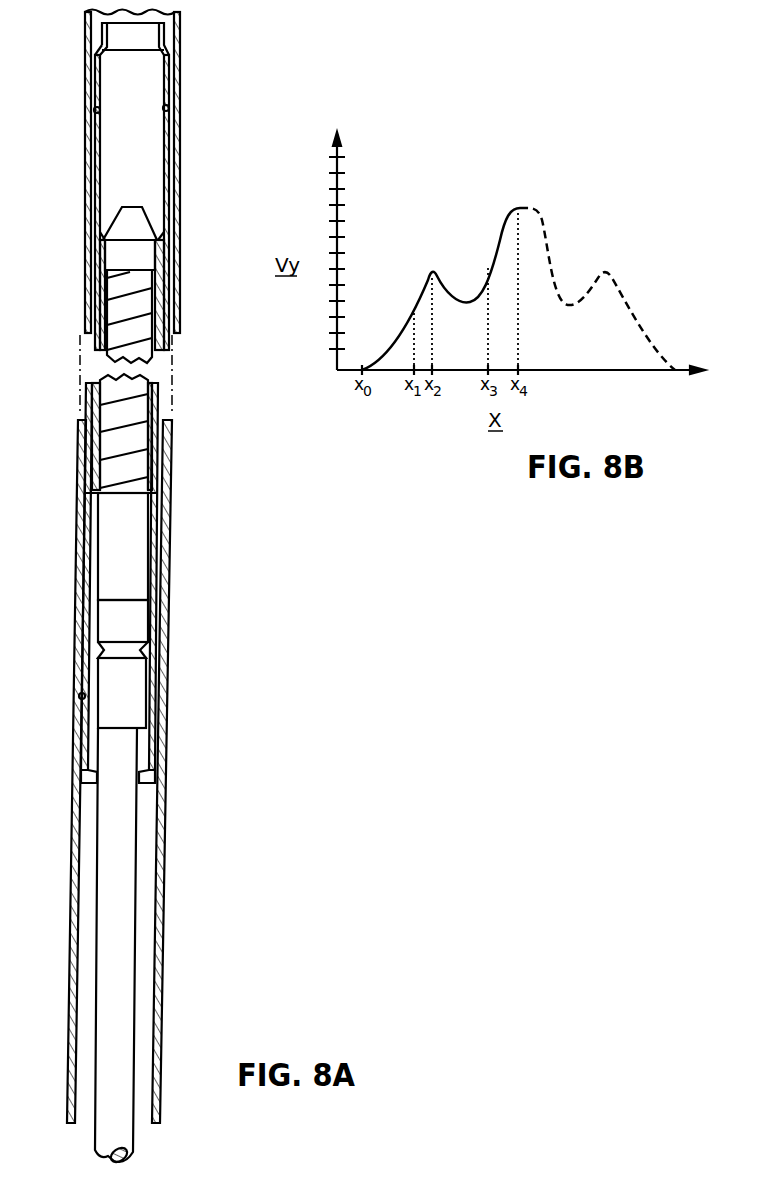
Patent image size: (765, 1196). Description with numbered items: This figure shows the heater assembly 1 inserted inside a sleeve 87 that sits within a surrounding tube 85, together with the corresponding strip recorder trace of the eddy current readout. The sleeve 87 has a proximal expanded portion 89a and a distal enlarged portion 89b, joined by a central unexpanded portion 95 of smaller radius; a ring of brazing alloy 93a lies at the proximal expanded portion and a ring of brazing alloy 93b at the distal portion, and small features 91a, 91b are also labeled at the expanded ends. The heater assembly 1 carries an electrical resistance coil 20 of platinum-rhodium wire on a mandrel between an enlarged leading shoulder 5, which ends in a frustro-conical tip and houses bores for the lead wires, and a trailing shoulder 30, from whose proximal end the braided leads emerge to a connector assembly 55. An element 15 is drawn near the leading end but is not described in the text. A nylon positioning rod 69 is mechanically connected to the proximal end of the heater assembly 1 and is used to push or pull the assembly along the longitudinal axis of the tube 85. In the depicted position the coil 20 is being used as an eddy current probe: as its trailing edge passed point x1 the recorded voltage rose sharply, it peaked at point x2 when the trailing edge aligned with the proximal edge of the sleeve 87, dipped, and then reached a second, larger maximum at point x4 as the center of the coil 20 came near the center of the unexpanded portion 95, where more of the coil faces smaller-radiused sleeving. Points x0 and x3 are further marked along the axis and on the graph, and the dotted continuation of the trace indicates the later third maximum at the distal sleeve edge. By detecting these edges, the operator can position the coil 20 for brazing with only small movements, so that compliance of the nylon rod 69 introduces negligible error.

The heater assembly 1 is at (118, 413).
The leading shoulder 5 is at (138, 266).
The threaded rod 15 is at (125, 320).
The coil 20 is at (160, 433).
The trailing shoulder 30 is at (135, 563).
The connector assembly 55 is at (135, 633).
The nylon positioning rod 69 is at (131, 841).
The tube 85 is at (180, 78).
The sleeve 87 is at (162, 48).
The proximal expanded portion of the sleeve 89a is at (160, 598).
The distal enlarged portion of the sleeve 89b is at (175, 155).
The seal 91a is at (80, 695).
The seal 91b is at (93, 108).
The ring of brazing alloy 93a is at (162, 700).
The ring of brazing alloy 93b is at (172, 105).
The central unexpanded portion of the sleeve 95 is at (165, 402).
The position x0 is at (143, 922).
The point X1 x1 is at (147, 812).
The point X2 x2 is at (153, 788).
The position x3 is at (155, 648).
The point X4 x4 is at (165, 495).